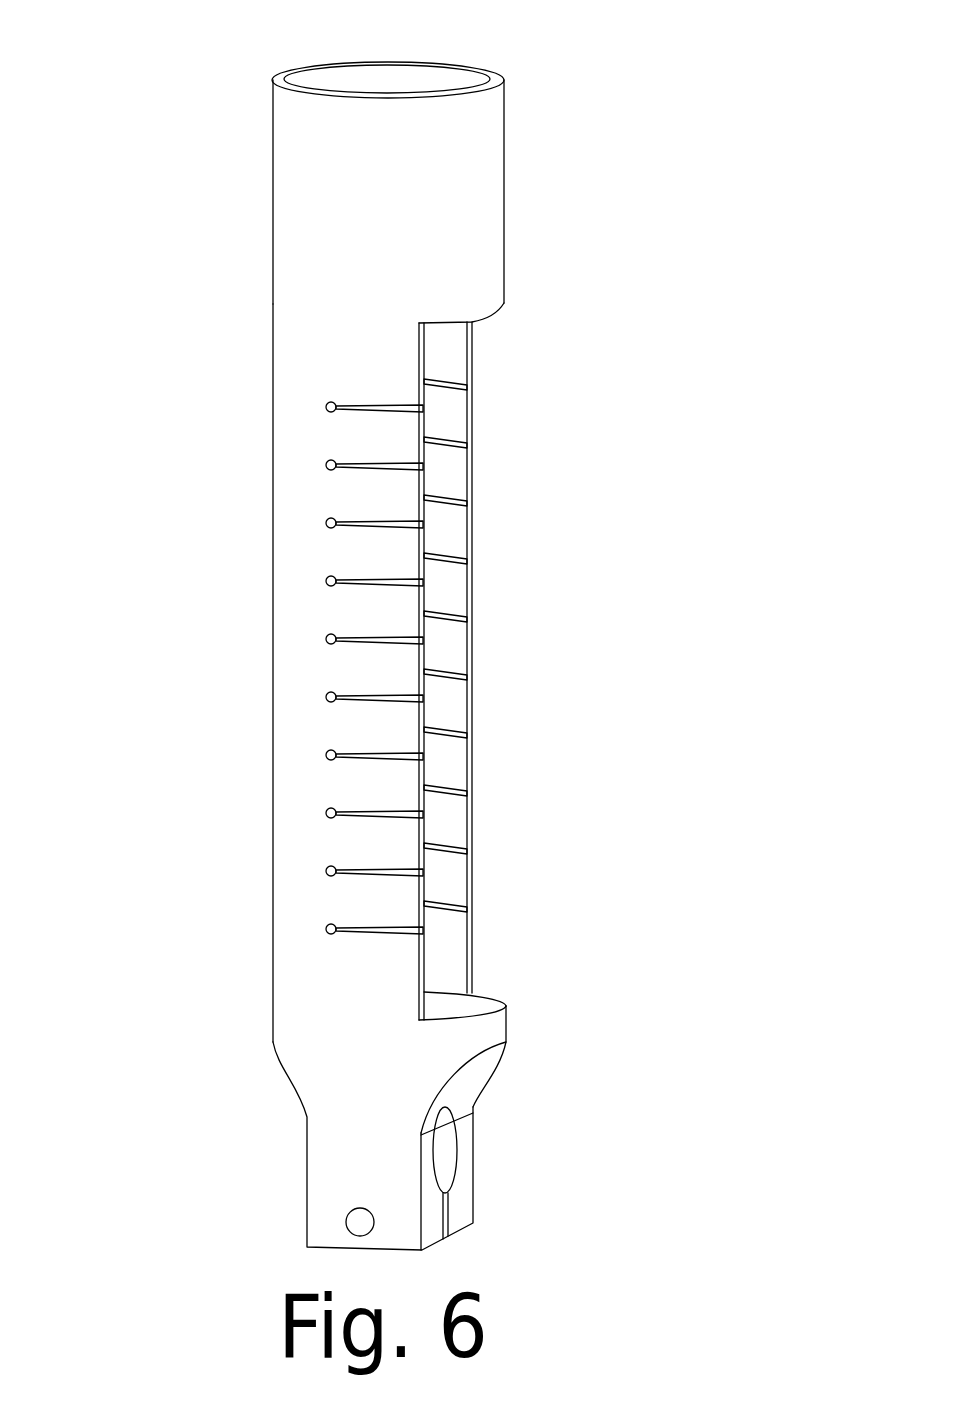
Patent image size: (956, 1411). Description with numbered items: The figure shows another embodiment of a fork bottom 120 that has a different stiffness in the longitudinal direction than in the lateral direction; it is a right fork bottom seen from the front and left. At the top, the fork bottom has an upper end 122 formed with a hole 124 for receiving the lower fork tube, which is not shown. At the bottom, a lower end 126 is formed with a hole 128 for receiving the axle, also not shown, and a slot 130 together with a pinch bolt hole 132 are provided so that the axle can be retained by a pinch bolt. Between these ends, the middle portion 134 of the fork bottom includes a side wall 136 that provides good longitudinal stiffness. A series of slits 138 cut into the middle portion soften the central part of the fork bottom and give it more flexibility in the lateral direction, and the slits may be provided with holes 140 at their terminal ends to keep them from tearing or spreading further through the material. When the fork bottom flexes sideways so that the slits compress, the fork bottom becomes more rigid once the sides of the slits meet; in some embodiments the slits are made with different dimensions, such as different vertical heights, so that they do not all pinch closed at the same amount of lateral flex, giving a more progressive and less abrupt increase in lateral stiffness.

The fork bottom 120 is at (113, 1056).
The upper end 122 is at (483, 196).
The hole 124 is at (324, 62).
The lower end 126 is at (482, 1031).
The hole 128 is at (470, 1140).
The slot 130 is at (471, 1242).
The pinch bolt hole 132 is at (325, 1209).
The middle portion 134 is at (580, 641).
The side wall 136 is at (287, 613).
The slits 138 is at (380, 413).
The holes 140 is at (334, 402).